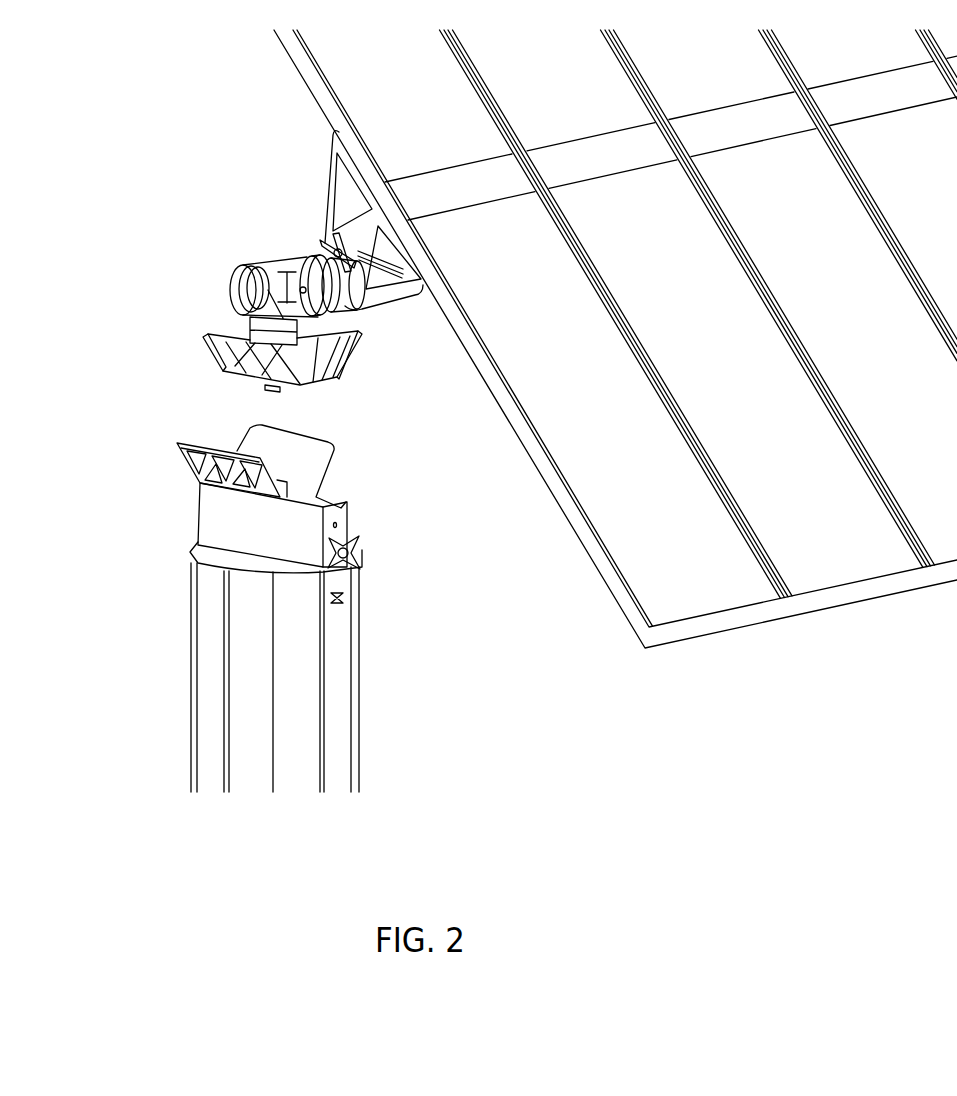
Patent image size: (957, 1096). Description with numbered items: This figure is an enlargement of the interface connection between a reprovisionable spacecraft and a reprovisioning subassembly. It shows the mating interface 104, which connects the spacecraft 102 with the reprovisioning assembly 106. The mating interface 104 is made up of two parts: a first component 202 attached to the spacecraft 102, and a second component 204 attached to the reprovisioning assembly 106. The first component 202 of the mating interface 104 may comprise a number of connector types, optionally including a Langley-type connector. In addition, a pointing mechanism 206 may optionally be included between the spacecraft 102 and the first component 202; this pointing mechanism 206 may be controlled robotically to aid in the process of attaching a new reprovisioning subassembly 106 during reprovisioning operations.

The spacecraft 102 is at (737, 637).
The mating interface 104 is at (180, 430).
The reprovisioning assembly 106 is at (363, 638).
The first component 202 is at (353, 380).
The second component 204 is at (335, 470).
The pointing mechanism 206 is at (277, 247).